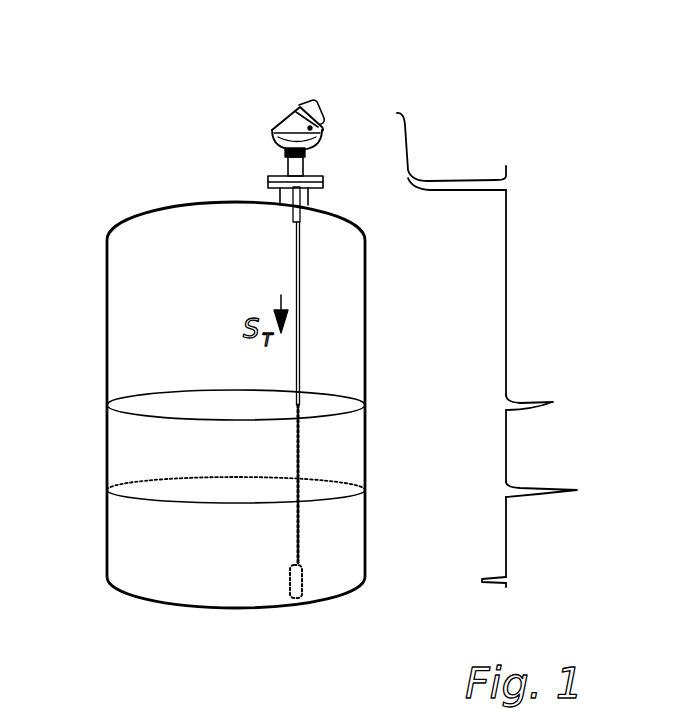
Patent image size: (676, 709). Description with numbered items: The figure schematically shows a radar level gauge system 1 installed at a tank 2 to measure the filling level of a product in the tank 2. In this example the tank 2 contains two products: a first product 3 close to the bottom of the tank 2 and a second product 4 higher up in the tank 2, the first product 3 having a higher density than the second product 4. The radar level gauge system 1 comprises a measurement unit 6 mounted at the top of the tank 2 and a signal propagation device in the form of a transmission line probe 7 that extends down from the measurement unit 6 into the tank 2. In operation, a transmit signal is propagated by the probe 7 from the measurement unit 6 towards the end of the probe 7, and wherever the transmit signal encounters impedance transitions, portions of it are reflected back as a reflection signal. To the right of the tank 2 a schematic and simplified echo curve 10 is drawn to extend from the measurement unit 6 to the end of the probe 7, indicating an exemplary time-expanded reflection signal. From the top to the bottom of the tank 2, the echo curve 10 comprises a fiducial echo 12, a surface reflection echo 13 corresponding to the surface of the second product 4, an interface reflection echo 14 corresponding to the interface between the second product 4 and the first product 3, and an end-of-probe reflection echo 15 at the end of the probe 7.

The radar level gauge system 1 is at (238, 100).
The tank 2 is at (106, 342).
The first product 3 is at (212, 552).
The second product 4 is at (212, 465).
The measurement unit 6 is at (290, 113).
The transmission line probe 7 is at (298, 298).
The echo curve 10 is at (568, 146).
The fiducial echo 12 is at (437, 138).
The surface reflection echo 13 is at (553, 402).
The interface reflection echo 14 is at (577, 490).
The end-of-probe reflection echo 15 is at (482, 579).